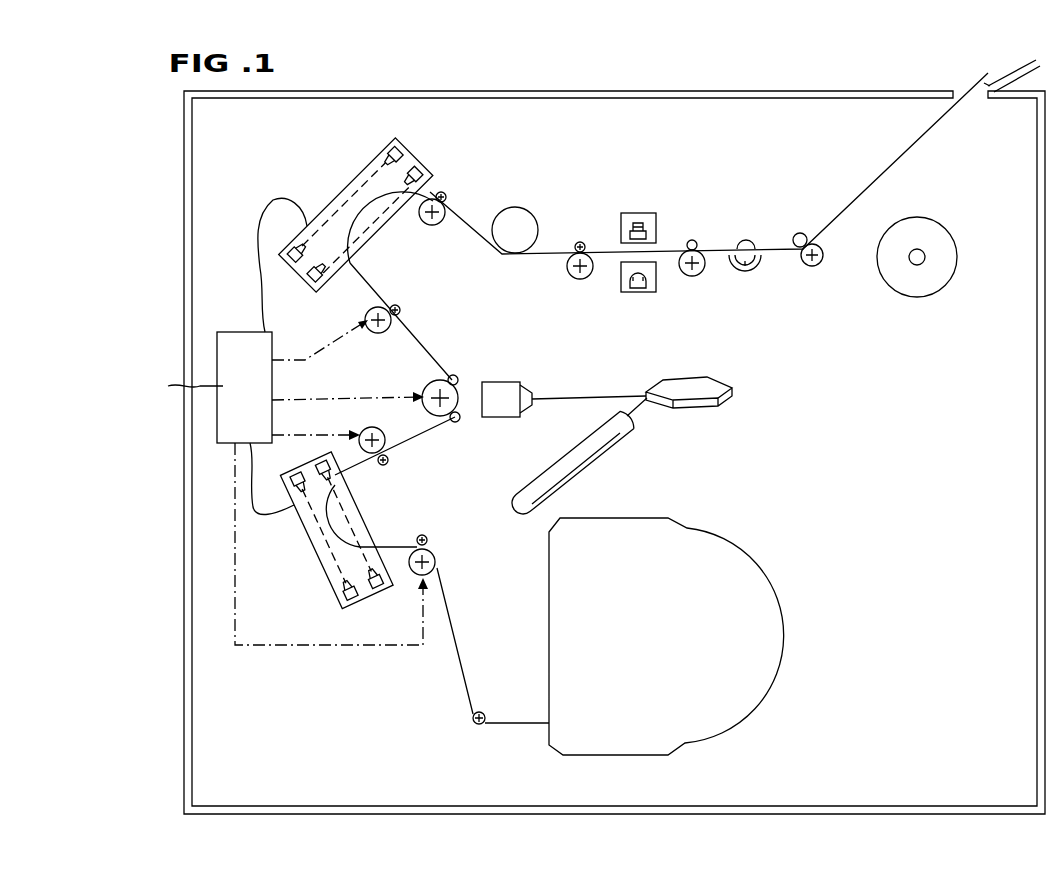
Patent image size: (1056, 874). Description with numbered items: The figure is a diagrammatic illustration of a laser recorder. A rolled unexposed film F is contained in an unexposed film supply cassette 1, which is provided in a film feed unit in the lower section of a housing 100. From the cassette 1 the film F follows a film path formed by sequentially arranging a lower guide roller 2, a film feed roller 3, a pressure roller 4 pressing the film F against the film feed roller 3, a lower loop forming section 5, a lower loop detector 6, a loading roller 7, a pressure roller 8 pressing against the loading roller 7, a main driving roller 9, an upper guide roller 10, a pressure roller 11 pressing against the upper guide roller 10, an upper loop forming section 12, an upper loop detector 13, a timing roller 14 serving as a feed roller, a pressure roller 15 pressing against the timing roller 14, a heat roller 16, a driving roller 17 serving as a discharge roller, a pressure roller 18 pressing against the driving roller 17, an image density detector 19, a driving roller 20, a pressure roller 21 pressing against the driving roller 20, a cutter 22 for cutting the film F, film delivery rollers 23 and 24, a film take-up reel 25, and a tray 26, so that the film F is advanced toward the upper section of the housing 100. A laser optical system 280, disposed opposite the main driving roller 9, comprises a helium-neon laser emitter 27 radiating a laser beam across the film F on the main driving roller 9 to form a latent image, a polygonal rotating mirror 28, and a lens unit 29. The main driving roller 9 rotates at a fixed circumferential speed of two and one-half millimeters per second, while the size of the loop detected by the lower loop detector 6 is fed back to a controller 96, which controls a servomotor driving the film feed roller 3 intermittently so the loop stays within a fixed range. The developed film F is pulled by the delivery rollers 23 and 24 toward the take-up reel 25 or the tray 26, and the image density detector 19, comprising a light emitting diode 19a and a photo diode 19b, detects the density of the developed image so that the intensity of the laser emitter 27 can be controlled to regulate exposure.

The unexposed film supply cassette 1 is at (623, 742).
The lower guide roller 2 is at (478, 725).
The film feed roller 3 is at (436, 562).
The pressure roller 4 is at (428, 539).
The lower loop forming section 5 is at (397, 557).
The lower loop detector 6 is at (317, 543).
The loading roller 7 is at (387, 438).
The pressure roller 8 is at (383, 466).
The main driving roller 9 is at (413, 397).
The upper guide roller 10 is at (372, 332).
The pressure roller 11 is at (400, 311).
The upper loop forming section 12 is at (362, 287).
The upper loop detector 13 is at (340, 188).
The timing roller 14 is at (430, 227).
The pressure roller 15 is at (446, 193).
The heat roller 16 is at (508, 225).
The driving roller 17 is at (578, 280).
The pressure roller 18 is at (580, 242).
The image density detector 19 is at (660, 229).
The light emitting diode 19a is at (621, 222).
The photo diode 19b is at (636, 292).
The driving roller 20 is at (692, 276).
The pressure roller 21 is at (693, 240).
The cutter 22 is at (748, 271).
The film delivery roller 23 is at (812, 266).
The film delivery roller 24 is at (800, 233).
The film take-up reel 25 is at (888, 273).
The tray 26 is at (1010, 68).
The helium-neon laser emitter 27 is at (607, 450).
The polygonal rotating mirror 28 is at (718, 385).
The lens unit 29 is at (500, 392).
The laser optical system 280 is at (664, 428).
The controller 96 is at (230, 338).
The housing 100 is at (903, 90).
The unexposed film F is at (457, 657).